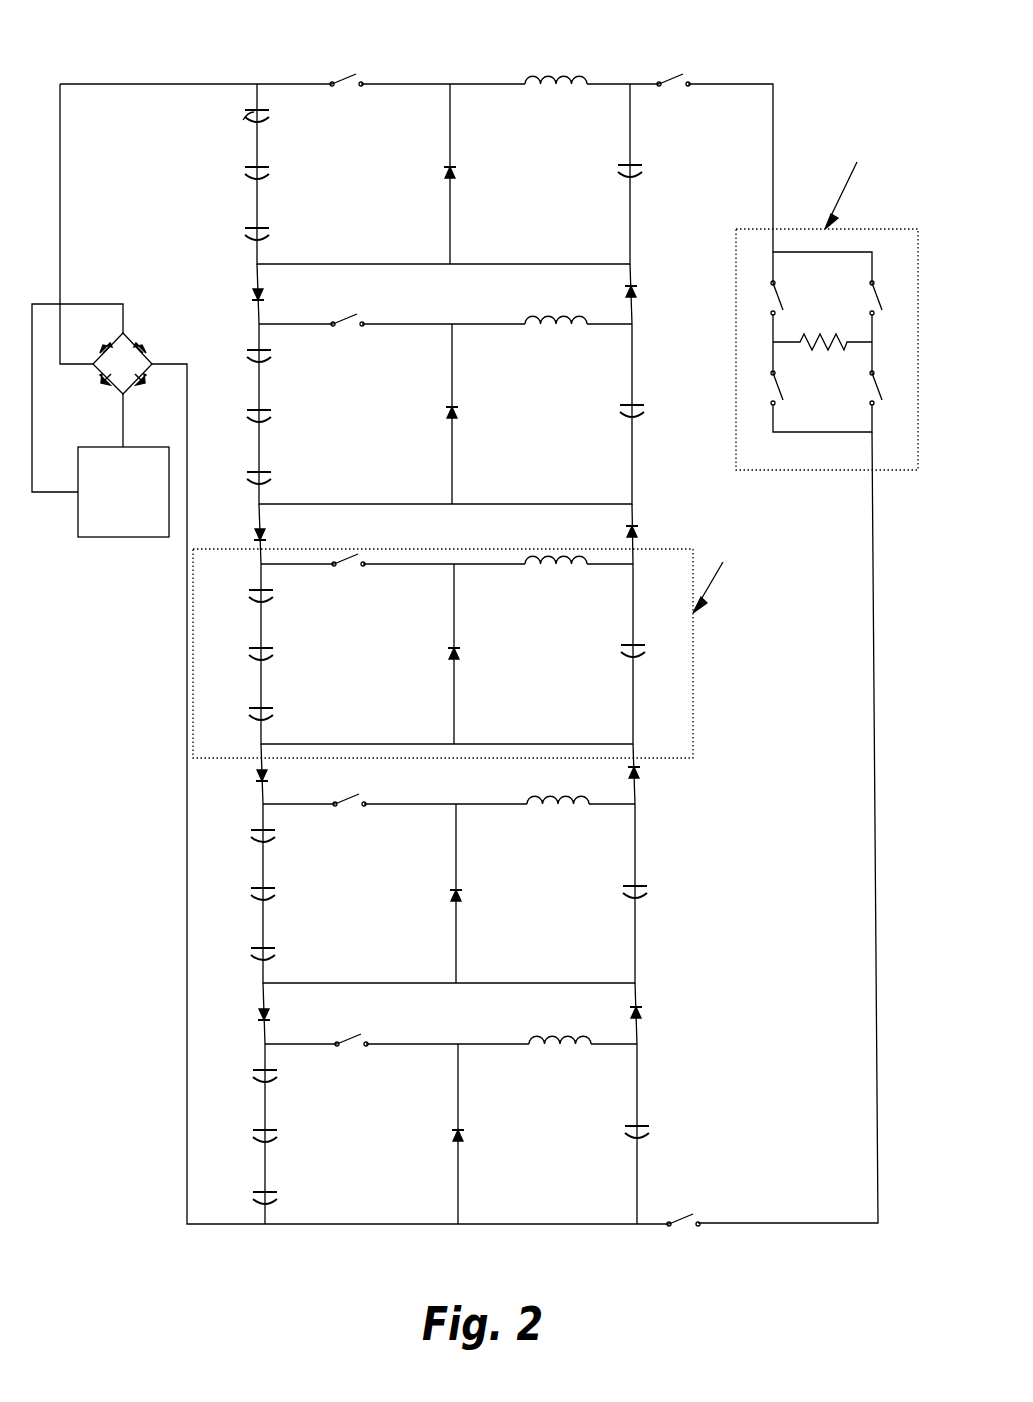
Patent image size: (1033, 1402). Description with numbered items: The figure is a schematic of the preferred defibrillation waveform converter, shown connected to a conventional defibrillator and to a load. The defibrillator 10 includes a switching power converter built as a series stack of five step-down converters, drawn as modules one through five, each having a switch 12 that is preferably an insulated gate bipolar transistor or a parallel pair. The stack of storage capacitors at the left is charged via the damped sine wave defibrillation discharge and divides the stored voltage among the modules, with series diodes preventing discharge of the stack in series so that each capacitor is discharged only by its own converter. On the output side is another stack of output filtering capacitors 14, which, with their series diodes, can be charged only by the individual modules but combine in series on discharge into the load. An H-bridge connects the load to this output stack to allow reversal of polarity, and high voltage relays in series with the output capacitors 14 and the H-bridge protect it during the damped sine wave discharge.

The defibrillator 10 is at (158, 624).
The switch 12 is at (346, 78).
The output filtering capacitors 14 is at (634, 164).